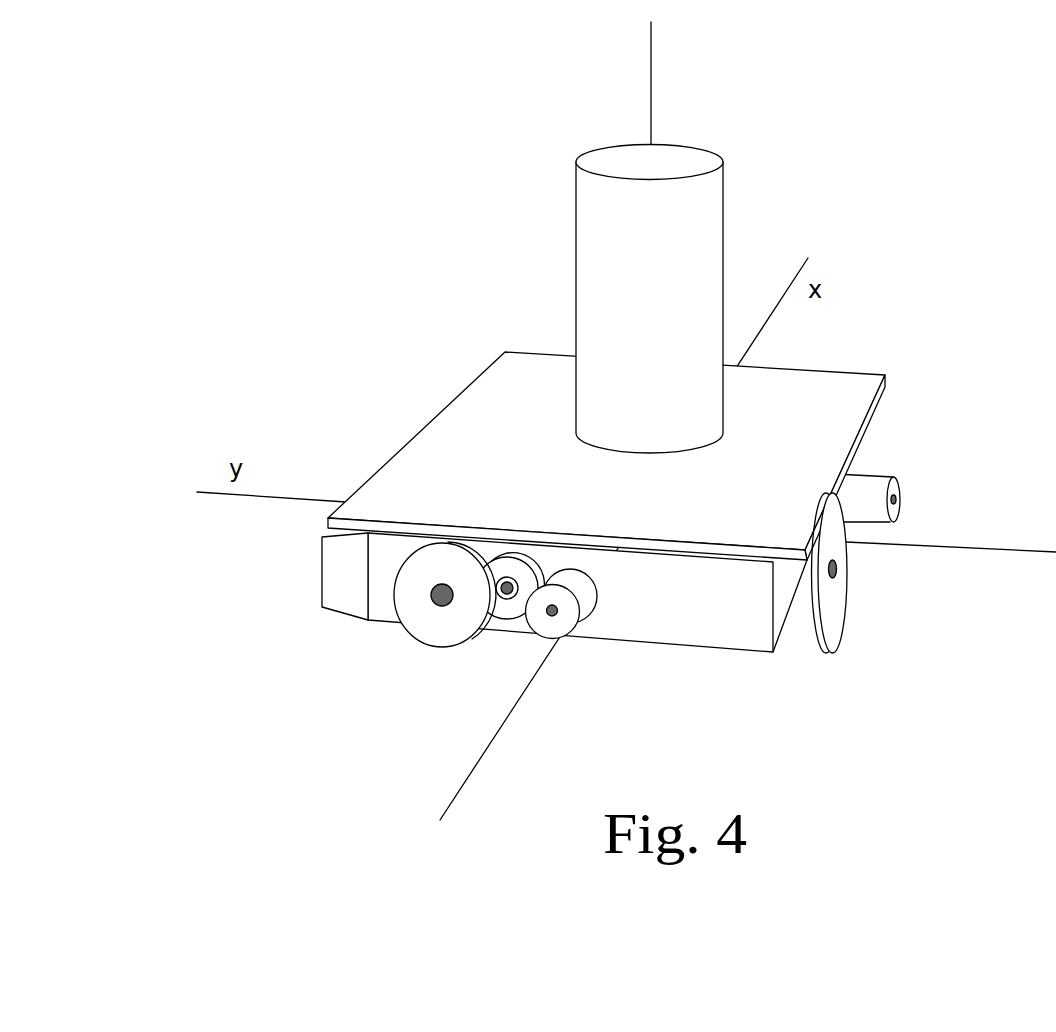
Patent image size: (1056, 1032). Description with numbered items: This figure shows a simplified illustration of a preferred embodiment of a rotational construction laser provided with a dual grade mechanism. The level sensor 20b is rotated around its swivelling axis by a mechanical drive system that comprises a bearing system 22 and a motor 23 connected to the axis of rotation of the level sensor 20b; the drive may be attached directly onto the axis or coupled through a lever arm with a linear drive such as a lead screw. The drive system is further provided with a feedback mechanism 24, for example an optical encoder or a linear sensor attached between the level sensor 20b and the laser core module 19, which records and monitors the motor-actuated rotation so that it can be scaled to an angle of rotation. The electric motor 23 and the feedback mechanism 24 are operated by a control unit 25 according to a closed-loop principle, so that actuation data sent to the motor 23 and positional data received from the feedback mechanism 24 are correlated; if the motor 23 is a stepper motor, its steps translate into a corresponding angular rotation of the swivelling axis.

The laser core module 19 is at (605, 230).
The level sensor 20b is at (317, 556).
The bearing system 22 is at (418, 605).
The motor 23 is at (565, 622).
The feedback mechanism 24 is at (867, 498).
The control unit 25 is at (803, 397).